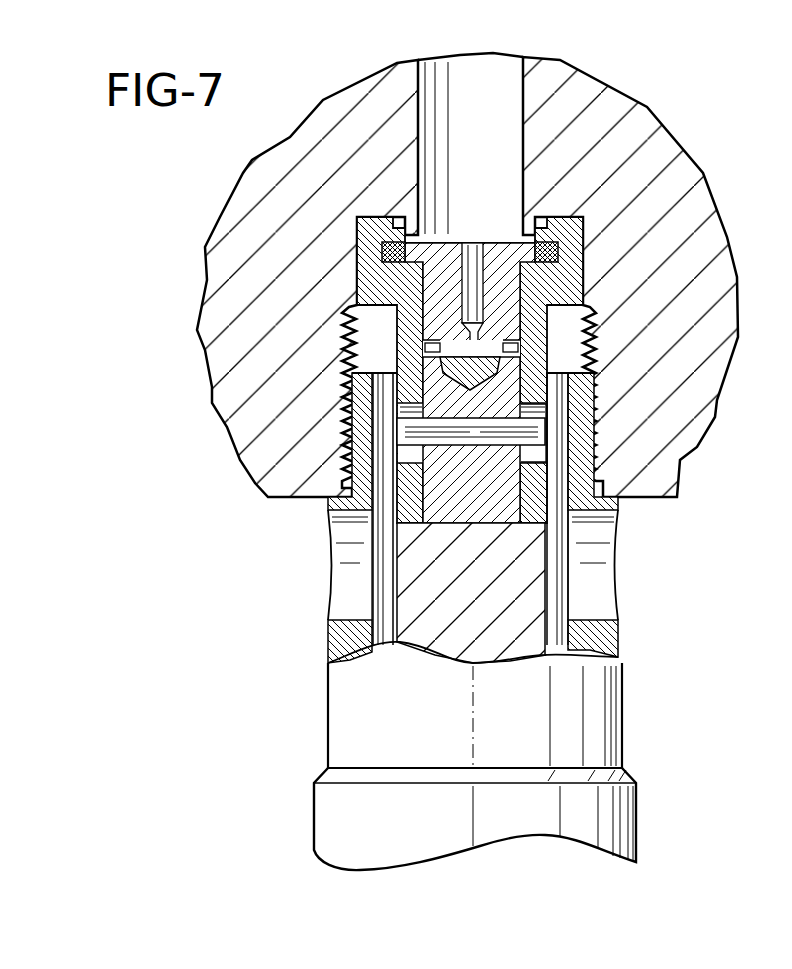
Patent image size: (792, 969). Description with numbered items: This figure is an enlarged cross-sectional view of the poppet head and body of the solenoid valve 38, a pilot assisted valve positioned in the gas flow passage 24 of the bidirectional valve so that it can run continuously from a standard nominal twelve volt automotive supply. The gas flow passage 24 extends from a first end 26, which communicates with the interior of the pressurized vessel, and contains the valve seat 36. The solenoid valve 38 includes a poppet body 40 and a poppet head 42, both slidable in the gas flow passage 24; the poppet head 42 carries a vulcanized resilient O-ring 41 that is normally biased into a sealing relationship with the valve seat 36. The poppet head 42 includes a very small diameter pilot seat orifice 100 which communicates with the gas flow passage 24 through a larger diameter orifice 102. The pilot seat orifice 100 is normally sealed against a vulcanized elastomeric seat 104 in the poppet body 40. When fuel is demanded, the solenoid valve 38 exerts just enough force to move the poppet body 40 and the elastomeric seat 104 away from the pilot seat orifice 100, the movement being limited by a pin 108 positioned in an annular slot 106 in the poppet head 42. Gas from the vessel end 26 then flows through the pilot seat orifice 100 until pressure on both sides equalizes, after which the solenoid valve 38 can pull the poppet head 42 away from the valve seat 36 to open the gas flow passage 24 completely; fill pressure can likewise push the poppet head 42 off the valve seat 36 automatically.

The gas flow passage 24 is at (497, 68).
The first end 26 is at (331, 571).
The valve seat 36 is at (521, 233).
The solenoid valve 38 is at (650, 712).
The poppet body 40 is at (540, 566).
The vulcanized resilient O-ring 41 is at (557, 250).
The poppet head 42 is at (562, 285).
The pilot seat orifice 100 is at (468, 337).
The larger diameter orifice 102 is at (470, 240).
The vulcanized elastomeric seat 104 is at (545, 363).
The annular slot 106 is at (538, 455).
The pin 108 is at (482, 430).